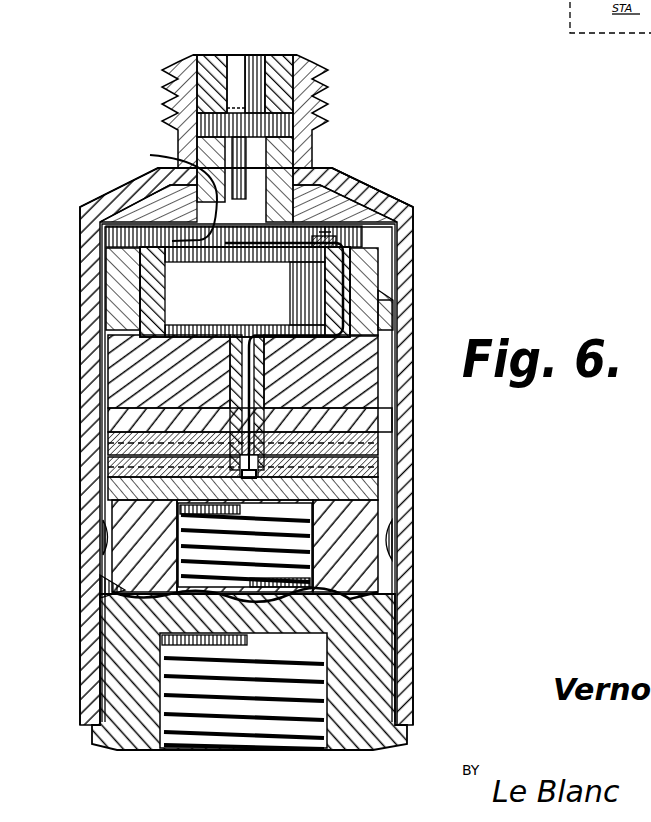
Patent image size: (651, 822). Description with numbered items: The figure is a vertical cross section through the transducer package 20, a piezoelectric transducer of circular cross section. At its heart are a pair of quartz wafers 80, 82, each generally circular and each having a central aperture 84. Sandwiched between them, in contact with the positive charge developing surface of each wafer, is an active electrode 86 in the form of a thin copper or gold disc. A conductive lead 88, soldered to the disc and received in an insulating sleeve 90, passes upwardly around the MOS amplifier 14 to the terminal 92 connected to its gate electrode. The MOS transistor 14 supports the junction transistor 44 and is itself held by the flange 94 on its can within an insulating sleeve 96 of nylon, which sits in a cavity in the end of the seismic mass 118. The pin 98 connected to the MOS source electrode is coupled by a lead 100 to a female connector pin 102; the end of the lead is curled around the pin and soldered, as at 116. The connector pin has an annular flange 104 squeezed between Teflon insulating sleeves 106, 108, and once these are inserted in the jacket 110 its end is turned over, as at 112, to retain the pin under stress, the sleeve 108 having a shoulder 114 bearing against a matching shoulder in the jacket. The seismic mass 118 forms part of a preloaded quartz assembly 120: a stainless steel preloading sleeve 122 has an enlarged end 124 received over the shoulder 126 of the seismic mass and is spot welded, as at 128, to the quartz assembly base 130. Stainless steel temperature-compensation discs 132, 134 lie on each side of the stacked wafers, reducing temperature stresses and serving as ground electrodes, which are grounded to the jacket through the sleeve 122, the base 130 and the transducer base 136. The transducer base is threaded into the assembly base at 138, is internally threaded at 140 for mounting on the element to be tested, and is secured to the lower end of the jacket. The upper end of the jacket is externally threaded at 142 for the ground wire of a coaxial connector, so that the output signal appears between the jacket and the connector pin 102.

The transducer package 20 is at (105, 190).
The junction transistor 44 is at (240, 236).
The MOS amplifier 14 is at (254, 310).
The quartz wafer 80 is at (412, 433).
The quartz wafer 82 is at (390, 473).
The central aperture 84 is at (268, 470).
The active electrode 86 is at (380, 448).
The conductive lead 88 is at (238, 372).
The insulating sleeve 90 is at (266, 368).
The amplifier terminal 92 is at (322, 198).
The flange 94 is at (153, 269).
The insulating sleeve 96 is at (143, 307).
The pin 98 is at (245, 292).
The lead 100 is at (166, 192).
The female connector pin 102 is at (234, 57).
The annular flange 104 is at (217, 125).
The insulating sleeve 106 is at (200, 83).
The insulating sleeve 108 is at (273, 150).
The transducer case or jacket 110 is at (84, 362).
The turned-over end of jacket 112 is at (200, 53).
The shoulder 114 is at (293, 160).
The soldered curl of lead 116 is at (267, 97).
The seismic mass 118 is at (390, 347).
The preloaded quartz assembly 120 is at (98, 447).
The preloading sleeve 122 is at (97, 333).
The enlarged end 124 is at (412, 296).
The shoulder 126 is at (393, 315).
The spot weld 128 is at (100, 543).
The quartz assembly base 130 is at (400, 557).
The temperature-compensation disc 132 is at (199, 420).
The temperature-compensation disc 134 is at (120, 492).
The transducer base 136 is at (382, 640).
The threaded connection 138 is at (100, 597).
The internal threads 140 is at (253, 730).
The external threads 142 is at (295, 63).